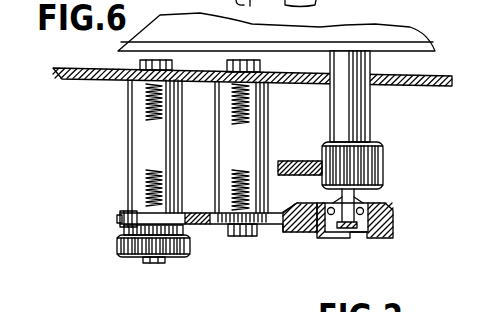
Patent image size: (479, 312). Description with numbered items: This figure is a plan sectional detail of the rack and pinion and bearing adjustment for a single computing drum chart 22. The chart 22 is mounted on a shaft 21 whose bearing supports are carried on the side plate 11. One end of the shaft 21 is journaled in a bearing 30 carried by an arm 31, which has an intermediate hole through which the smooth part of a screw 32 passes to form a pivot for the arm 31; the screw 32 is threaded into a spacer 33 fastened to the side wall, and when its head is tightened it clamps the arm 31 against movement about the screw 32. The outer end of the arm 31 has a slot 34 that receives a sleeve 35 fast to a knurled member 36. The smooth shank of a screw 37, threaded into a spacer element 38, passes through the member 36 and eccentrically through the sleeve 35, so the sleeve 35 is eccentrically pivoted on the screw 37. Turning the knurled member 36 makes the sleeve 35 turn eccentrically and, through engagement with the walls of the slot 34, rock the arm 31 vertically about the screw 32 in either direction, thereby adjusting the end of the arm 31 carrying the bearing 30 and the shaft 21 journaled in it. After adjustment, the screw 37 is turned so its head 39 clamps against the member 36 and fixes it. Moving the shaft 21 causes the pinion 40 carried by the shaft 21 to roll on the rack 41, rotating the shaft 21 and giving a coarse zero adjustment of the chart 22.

The side plate 11 is at (92, 80).
The shaft 21 is at (369, 116).
The computing drum chart 22 is at (378, 30).
The bearing 30 is at (362, 238).
The arm 31 is at (298, 224).
The screw 32 is at (228, 236).
The spacer 33 is at (258, 136).
The slot 34 is at (118, 219).
The sleeve 35 is at (120, 214).
The knurled member 36 is at (191, 257).
The screw 37 is at (160, 187).
The spacer element 38 is at (122, 146).
The head 39 is at (143, 259).
The pinion 40 is at (384, 162).
The rack 41 is at (288, 175).